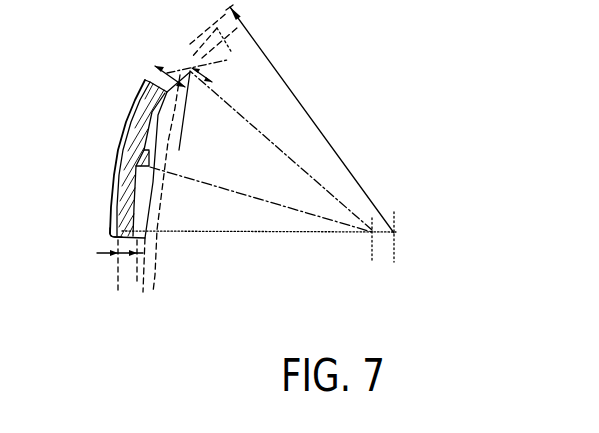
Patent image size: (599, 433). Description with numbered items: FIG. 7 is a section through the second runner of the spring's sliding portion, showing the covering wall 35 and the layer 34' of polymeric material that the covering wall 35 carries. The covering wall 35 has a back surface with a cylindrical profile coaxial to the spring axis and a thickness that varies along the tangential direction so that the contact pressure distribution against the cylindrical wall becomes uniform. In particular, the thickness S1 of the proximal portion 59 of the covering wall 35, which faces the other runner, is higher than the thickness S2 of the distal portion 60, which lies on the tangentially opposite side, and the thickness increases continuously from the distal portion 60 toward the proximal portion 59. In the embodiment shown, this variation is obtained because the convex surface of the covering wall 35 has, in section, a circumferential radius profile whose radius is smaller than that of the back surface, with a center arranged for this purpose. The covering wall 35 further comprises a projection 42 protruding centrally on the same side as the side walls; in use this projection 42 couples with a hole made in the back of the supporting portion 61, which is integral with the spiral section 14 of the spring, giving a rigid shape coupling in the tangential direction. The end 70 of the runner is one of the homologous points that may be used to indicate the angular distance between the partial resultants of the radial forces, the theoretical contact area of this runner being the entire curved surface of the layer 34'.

The spiral section 14 is at (148, 290).
The layer of polymeric material of runner 19 34' is at (100, 161).
The covering wall 35 is at (118, 150).
The projection 42 is at (140, 164).
The proximal portion 59 is at (136, 83).
The distal portion 60 is at (108, 229).
The supporting portion 61 is at (186, 32).
The end of runner 19 70 is at (145, 240).
The thickness of proximal portion S1 is at (175, 68).
The thickness of distal portion S2 is at (118, 255).